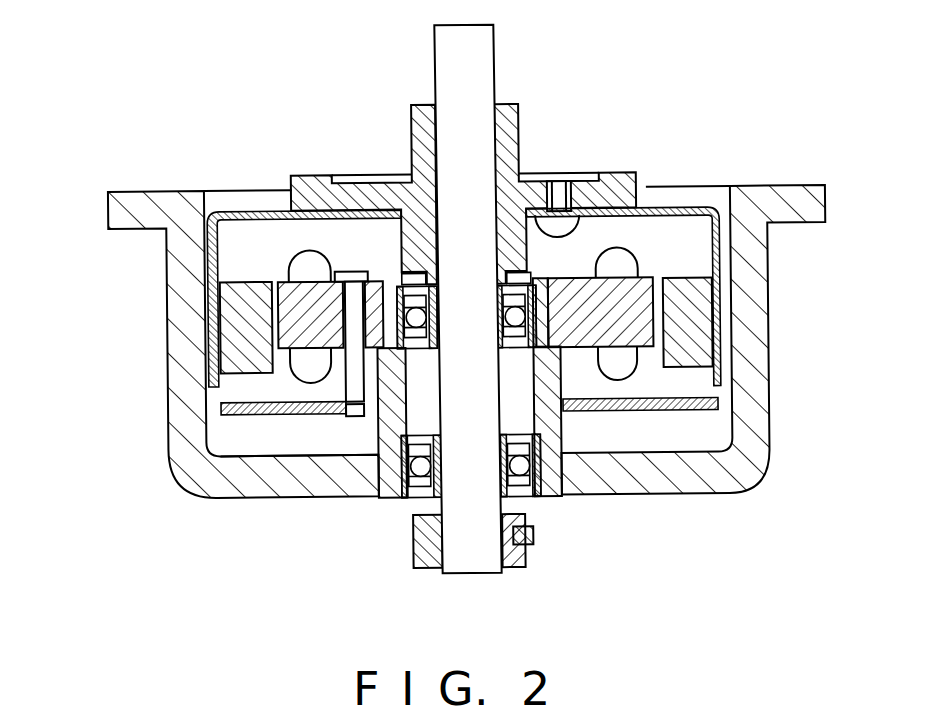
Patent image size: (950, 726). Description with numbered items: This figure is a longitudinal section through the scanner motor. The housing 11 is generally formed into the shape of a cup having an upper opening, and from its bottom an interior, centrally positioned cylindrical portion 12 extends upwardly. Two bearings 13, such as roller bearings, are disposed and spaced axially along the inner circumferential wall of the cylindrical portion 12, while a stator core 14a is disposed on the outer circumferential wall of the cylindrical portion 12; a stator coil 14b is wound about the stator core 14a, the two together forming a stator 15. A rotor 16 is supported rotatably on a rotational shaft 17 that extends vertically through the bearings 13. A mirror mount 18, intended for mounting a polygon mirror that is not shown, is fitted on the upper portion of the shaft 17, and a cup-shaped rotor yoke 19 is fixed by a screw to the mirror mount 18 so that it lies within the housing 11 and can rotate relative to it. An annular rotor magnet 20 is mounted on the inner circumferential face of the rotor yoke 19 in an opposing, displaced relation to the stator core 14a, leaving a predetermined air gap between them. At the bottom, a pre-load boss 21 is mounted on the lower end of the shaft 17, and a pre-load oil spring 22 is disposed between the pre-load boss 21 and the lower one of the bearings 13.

The housing 11 is at (167, 470).
The cylindrical portion 12 is at (377, 437).
The bearings 13 is at (542, 264).
The stator core 14a is at (587, 350).
The stator coil 14b is at (632, 267).
The stator 15 is at (642, 373).
The rotor 16 is at (277, 178).
The rotational shaft 17 is at (486, 50).
The mirror mount 18 is at (313, 173).
The rotor yoke 19 is at (208, 268).
The rotor magnet 20 is at (218, 337).
The pre-load boss 21 is at (414, 548).
The pre-load oil spring 22 is at (432, 506).